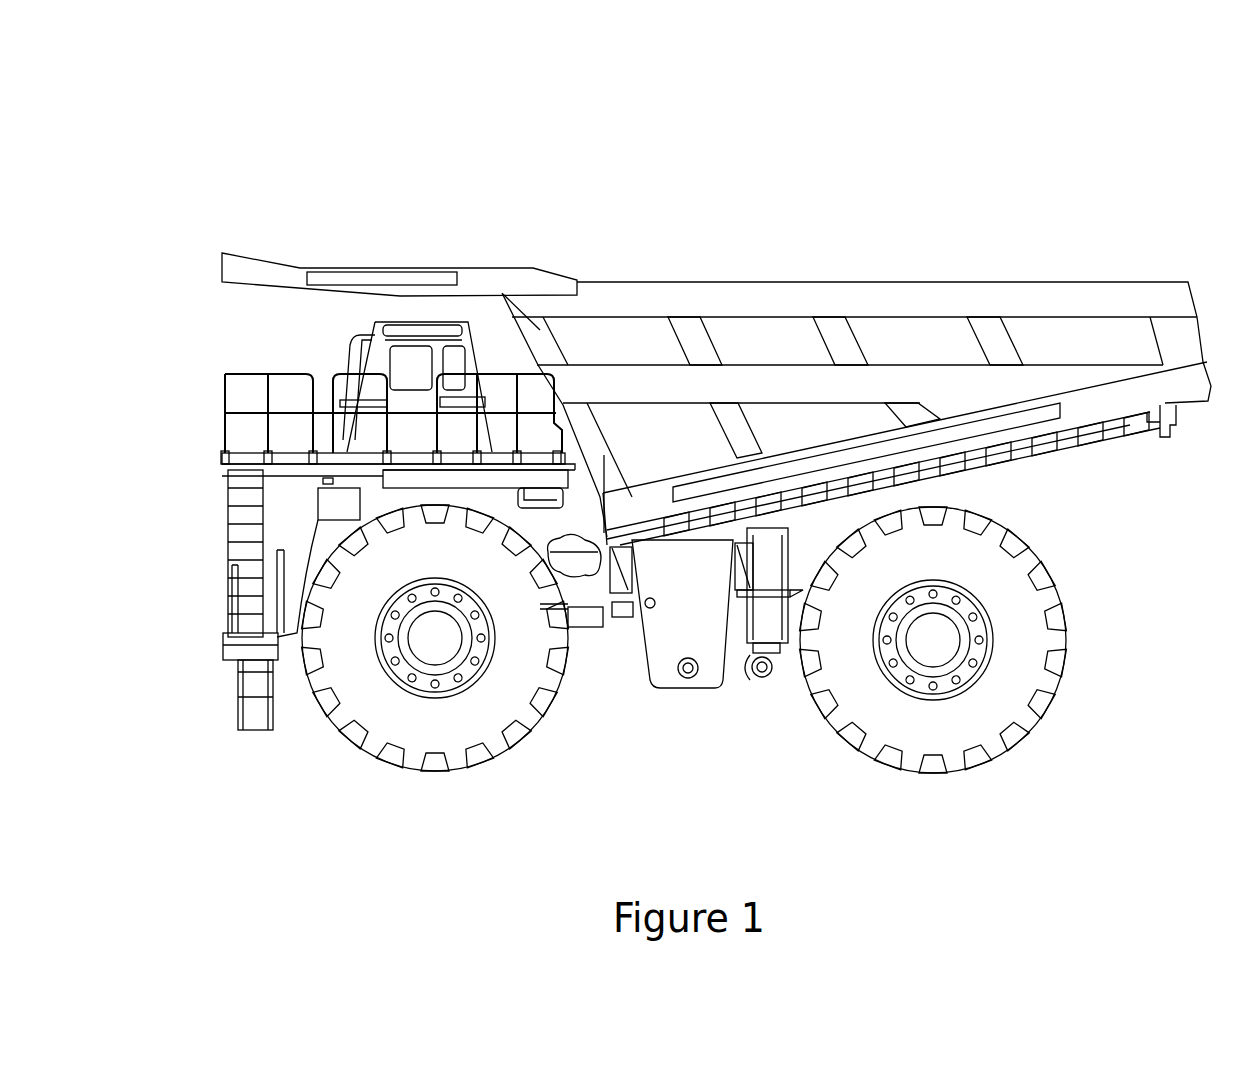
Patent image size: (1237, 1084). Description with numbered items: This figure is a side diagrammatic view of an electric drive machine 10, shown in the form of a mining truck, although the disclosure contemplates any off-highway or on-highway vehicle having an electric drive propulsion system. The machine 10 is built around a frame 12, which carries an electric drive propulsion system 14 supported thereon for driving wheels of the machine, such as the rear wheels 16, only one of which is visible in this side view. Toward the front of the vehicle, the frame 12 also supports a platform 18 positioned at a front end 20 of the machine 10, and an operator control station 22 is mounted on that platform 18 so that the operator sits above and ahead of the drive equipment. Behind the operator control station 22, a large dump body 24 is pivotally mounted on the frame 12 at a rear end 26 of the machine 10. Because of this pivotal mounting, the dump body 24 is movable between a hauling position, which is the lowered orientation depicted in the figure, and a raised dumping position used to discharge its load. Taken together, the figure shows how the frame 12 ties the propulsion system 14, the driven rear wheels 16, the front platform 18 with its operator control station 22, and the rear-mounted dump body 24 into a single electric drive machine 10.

The machine 10 is at (970, 94).
The frame 12 is at (593, 578).
The electric drive propulsion system 14 is at (590, 612).
The rear wheels 16 is at (1025, 712).
The platform 18 is at (405, 478).
The front end 20 is at (160, 220).
The operator control station 22 is at (375, 325).
The dump body 24 is at (1058, 281).
The rear end 26 is at (1150, 188).